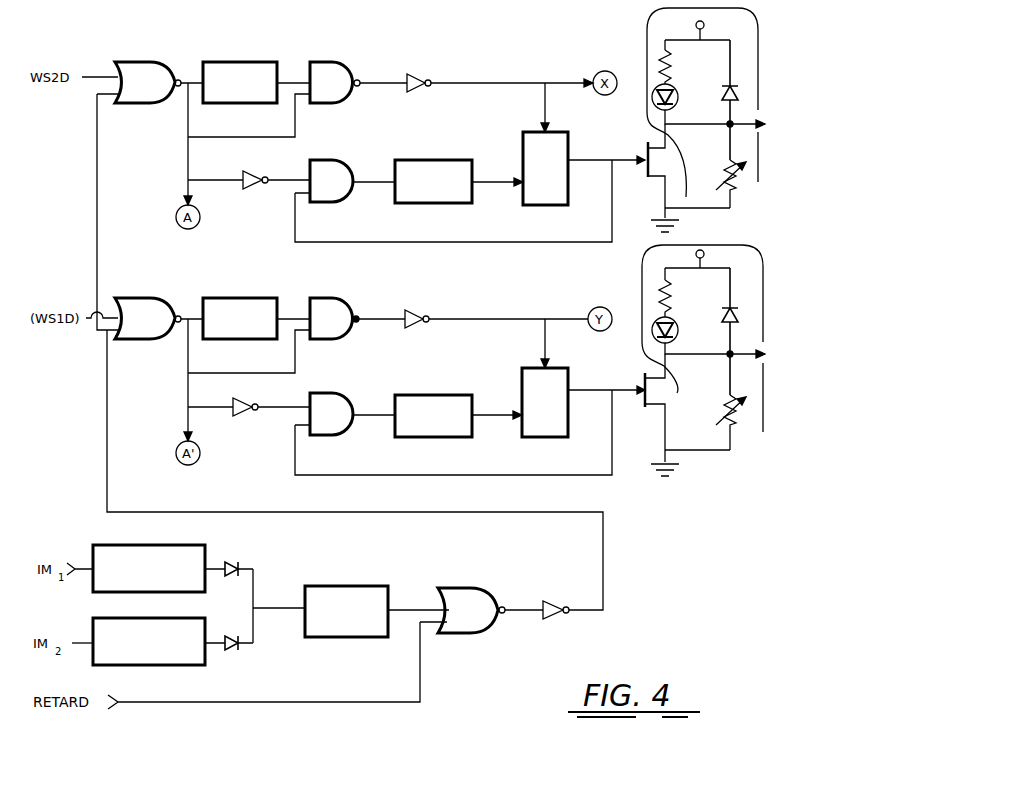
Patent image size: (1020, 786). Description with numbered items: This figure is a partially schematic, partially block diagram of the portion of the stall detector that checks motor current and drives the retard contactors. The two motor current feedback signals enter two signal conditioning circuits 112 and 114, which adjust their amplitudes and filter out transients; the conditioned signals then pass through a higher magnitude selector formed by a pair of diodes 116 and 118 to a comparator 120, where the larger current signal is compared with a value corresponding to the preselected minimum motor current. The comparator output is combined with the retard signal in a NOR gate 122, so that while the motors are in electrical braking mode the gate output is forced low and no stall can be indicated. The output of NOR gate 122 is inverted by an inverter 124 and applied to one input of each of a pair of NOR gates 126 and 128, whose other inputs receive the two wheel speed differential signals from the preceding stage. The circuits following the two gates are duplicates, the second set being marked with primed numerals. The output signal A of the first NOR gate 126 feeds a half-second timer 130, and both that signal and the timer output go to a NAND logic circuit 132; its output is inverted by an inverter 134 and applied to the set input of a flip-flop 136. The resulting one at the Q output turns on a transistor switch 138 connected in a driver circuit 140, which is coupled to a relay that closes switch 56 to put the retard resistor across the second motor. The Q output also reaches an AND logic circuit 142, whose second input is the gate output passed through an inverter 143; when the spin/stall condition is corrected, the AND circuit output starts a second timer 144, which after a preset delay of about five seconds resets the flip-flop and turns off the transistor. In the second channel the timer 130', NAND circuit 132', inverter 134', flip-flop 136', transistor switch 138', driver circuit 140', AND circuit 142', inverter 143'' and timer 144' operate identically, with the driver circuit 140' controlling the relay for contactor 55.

The contactor 55 is at (814, 377).
The switch 56 is at (809, 150).
The signal conditioning circuit 112 is at (152, 545).
The signal conditioning circuit 114 is at (143, 665).
The diode 116 is at (228, 567).
The diode 118 is at (226, 650).
The comparator 120 is at (338, 586).
The NOR gate 122 is at (465, 588).
The inverter 124 is at (538, 598).
The first NOR gate 126 is at (134, 62).
The second NOR gate 128 is at (134, 298).
The 0.5 second timer 130 is at (240, 72).
The 0.5 second timer 130' is at (248, 308).
The NAND logic circuit 132 is at (344, 70).
The NAND logic circuit 132' is at (340, 307).
The inverter 134 is at (435, 64).
The inverter 134' is at (433, 304).
The flip-flop 136 is at (535, 184).
The flip-flop 136' is at (538, 417).
The transistor switch 138 is at (632, 166).
The transistor switch 138' is at (631, 402).
The driver circuit 140 is at (746, 120).
The driver circuit 140' is at (746, 360).
The AND logic circuit 142 is at (338, 168).
The AND logic circuit 142' is at (338, 404).
The inverter 143 is at (245, 193).
The inverter 143'' is at (236, 426).
The second timer 144 is at (433, 169).
The timer 144' is at (433, 405).